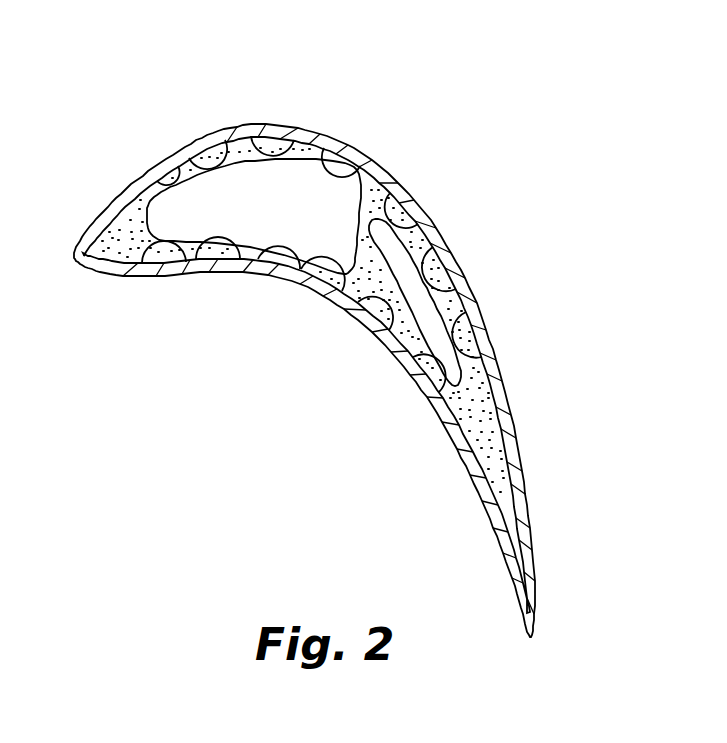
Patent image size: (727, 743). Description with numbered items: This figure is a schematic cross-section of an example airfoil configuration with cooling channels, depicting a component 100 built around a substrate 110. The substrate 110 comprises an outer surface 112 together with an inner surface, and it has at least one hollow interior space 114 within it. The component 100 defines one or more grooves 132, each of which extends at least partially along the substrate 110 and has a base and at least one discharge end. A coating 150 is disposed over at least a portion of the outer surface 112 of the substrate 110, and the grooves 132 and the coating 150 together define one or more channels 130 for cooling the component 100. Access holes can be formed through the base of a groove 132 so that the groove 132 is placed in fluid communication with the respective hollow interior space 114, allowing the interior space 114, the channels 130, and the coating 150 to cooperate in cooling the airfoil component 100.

The component 100 is at (519, 133).
The substrate 110 is at (365, 197).
The outer surface 112 is at (481, 423).
The interior space 114 is at (298, 200).
The channel 130 is at (221, 142).
The groove 132 is at (380, 317).
The coating 150 is at (458, 282).